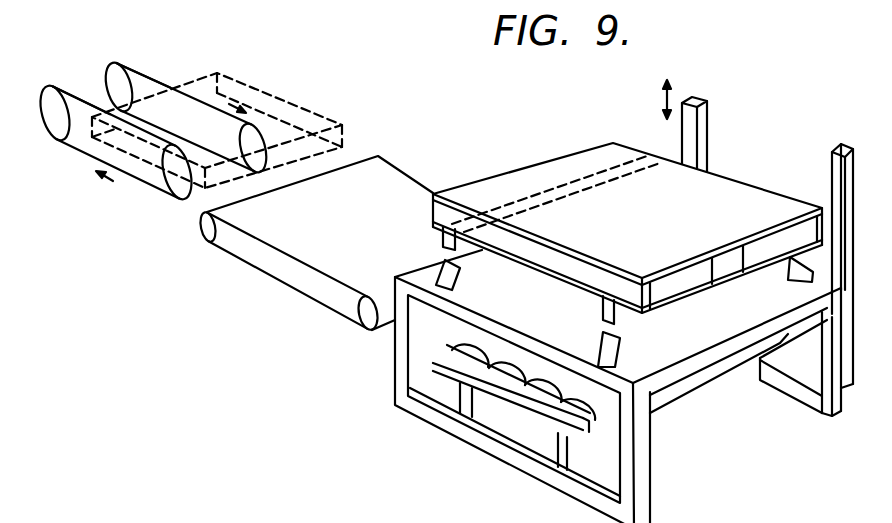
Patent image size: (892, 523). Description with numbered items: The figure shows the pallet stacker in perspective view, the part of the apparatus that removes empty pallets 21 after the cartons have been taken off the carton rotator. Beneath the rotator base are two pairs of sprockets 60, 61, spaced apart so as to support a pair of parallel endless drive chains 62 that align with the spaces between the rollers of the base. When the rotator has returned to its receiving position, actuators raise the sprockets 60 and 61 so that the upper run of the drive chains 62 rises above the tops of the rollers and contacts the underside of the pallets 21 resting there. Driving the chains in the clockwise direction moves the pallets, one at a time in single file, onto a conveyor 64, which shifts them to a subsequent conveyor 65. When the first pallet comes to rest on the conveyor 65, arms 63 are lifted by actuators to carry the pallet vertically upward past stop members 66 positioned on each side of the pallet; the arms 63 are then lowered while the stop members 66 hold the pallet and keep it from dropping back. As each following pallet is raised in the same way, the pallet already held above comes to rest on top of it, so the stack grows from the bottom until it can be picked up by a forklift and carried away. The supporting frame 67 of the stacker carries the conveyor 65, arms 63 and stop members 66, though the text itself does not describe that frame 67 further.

The pallet 21 is at (512, 180).
The sprockets 60 is at (137, 116).
The sprockets 61 is at (171, 165).
The drive chains 62 is at (78, 89).
The arms 63 is at (686, 163).
The conveyor 64 is at (340, 246).
The conveyor 65 is at (714, 395).
The stop members 66 is at (624, 312).
The table frame 67 is at (640, 453).